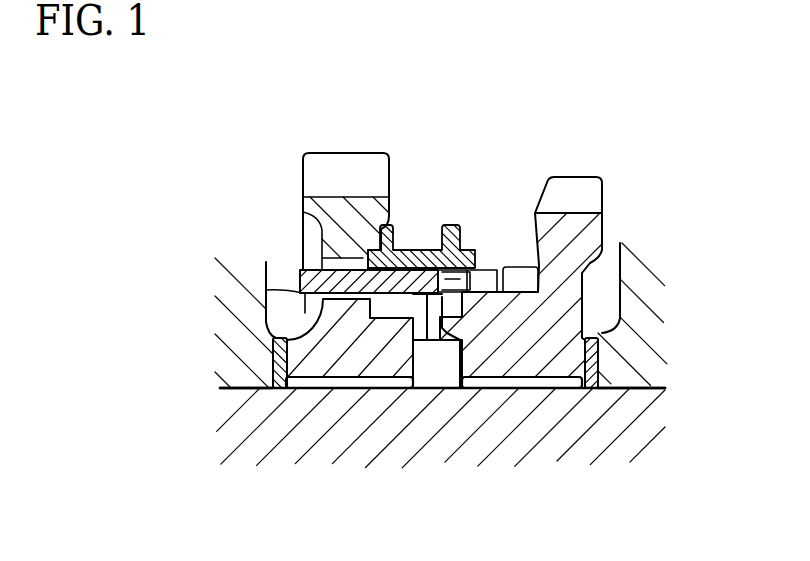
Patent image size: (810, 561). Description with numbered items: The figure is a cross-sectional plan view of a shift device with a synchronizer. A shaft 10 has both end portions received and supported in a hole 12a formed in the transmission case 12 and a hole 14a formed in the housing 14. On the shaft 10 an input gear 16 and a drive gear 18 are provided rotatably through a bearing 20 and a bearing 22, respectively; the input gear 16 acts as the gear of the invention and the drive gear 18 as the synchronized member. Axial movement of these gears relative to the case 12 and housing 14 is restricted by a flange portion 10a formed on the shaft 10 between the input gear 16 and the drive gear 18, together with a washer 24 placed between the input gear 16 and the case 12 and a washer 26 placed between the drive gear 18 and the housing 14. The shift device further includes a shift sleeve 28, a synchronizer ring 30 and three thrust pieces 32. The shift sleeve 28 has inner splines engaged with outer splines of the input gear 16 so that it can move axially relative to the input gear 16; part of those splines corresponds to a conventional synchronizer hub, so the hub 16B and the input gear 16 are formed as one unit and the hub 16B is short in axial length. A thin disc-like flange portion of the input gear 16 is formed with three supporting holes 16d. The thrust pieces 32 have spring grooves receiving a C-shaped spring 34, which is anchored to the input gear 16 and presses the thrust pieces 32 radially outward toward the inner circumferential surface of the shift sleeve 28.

The shaft 10 is at (410, 422).
The flange portion 10a is at (428, 297).
The case 12 is at (250, 308).
The hole 12a is at (238, 392).
The housing 14 is at (635, 307).
The hole 14a is at (623, 392).
The input gear 16 is at (362, 182).
The hub 16B is at (432, 345).
The supporting holes 16d is at (266, 263).
The drive gear 18 is at (577, 197).
The bearing 20 is at (323, 385).
The bearing 22 is at (507, 385).
The washer 24 is at (278, 363).
The washer 26 is at (597, 363).
The shift sleeve 28 is at (395, 222).
The synchronizer ring 30 is at (491, 270).
The thrust pieces 32 is at (300, 272).
The spring 34 is at (430, 300).